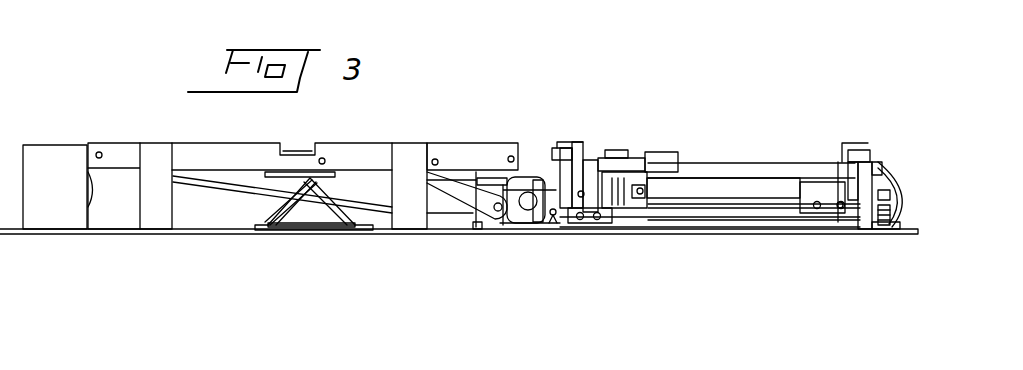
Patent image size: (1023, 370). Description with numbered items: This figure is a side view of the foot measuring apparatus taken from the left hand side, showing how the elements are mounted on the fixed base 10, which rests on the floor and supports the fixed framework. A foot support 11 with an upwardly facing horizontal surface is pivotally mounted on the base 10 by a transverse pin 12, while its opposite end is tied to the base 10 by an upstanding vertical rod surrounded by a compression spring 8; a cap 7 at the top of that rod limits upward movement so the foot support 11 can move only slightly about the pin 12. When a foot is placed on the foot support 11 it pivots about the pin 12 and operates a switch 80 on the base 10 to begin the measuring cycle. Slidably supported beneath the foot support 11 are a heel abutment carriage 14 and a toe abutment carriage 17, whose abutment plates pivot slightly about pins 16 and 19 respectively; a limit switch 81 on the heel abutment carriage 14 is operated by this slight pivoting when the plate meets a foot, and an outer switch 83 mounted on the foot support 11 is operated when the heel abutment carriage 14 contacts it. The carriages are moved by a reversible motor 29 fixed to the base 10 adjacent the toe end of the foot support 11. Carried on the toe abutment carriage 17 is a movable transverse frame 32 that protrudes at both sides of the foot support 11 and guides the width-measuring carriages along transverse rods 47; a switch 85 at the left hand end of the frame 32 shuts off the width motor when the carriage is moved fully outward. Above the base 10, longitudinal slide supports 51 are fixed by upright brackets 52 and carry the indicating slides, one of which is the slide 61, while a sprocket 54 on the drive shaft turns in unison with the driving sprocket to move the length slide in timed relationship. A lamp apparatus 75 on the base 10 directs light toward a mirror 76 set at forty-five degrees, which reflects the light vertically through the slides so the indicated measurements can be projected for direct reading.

The cap 7 is at (890, 193).
The compression spring 8 is at (892, 208).
The fixed base 10 is at (907, 240).
The foot support 11 is at (735, 168).
The transverse pin 12 is at (560, 227).
The heel abutment carriage 14 is at (808, 192).
The transverse pin 16 is at (845, 195).
The toe abutment carriage 17 is at (593, 193).
The pin 19 is at (583, 191).
The reversible motor 29 is at (490, 222).
The transverse frame 32 is at (626, 198).
The transverse rod 47 is at (644, 191).
The longitudinal slide support 51 is at (475, 152).
The upright bracket 52 is at (158, 218).
The sprocket 54 is at (488, 205).
The slide 61 is at (342, 135).
The lamp apparatus 75 is at (65, 127).
The mirror 76 is at (273, 208).
The switch 80 is at (900, 223).
The limit switch 81 is at (867, 150).
The outer switch 83 is at (877, 158).
The switch 85 is at (628, 160).